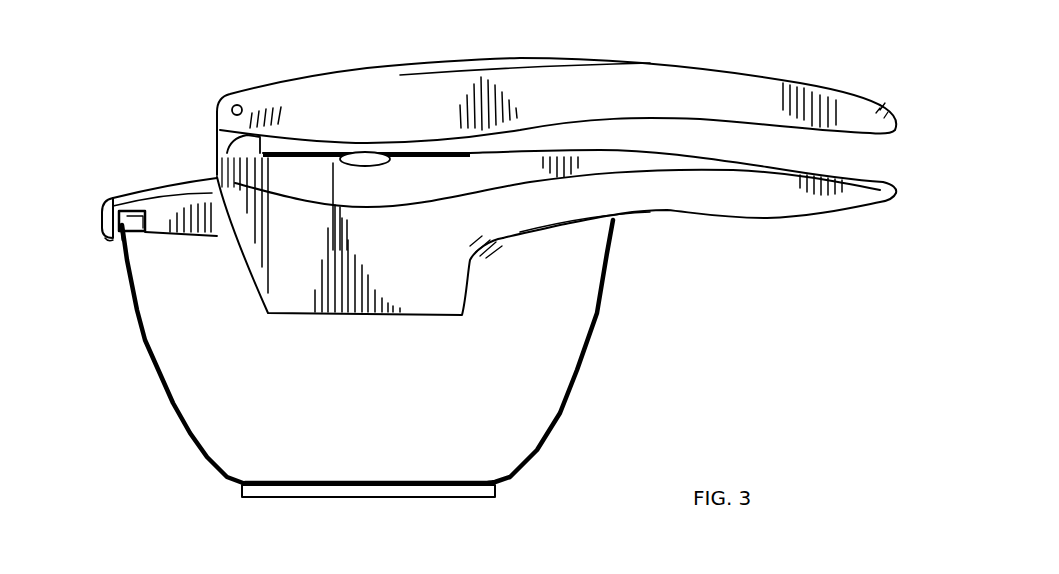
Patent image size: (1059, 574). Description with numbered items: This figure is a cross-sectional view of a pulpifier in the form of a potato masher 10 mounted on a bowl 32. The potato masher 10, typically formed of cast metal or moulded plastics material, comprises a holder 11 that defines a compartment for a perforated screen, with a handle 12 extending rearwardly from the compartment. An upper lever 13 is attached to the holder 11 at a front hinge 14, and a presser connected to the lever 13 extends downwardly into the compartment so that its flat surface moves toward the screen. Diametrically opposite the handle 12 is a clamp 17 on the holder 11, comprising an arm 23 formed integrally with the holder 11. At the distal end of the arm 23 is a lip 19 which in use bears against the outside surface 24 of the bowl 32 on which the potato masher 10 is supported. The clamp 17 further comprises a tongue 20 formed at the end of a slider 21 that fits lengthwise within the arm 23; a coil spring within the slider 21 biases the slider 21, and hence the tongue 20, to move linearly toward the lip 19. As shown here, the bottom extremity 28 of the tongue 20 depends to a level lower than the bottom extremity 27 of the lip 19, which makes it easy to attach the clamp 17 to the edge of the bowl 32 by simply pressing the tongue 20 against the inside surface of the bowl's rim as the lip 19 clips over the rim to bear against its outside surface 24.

The potato masher 10 is at (727, 45).
The holder 11 is at (436, 293).
The handle 12 is at (835, 210).
The upper lever 13 is at (837, 100).
The front hinge 14 is at (243, 105).
The clamp 17 is at (165, 152).
The lip 19 is at (110, 212).
The tongue 20 is at (133, 235).
The slider 21 is at (143, 232).
The arm 23 is at (196, 183).
The outside surface 24 is at (137, 330).
The bottom extremity of the lip 27 is at (110, 245).
The bottom extremity of the tongue 28 is at (130, 242).
The bowl 32 is at (562, 415).